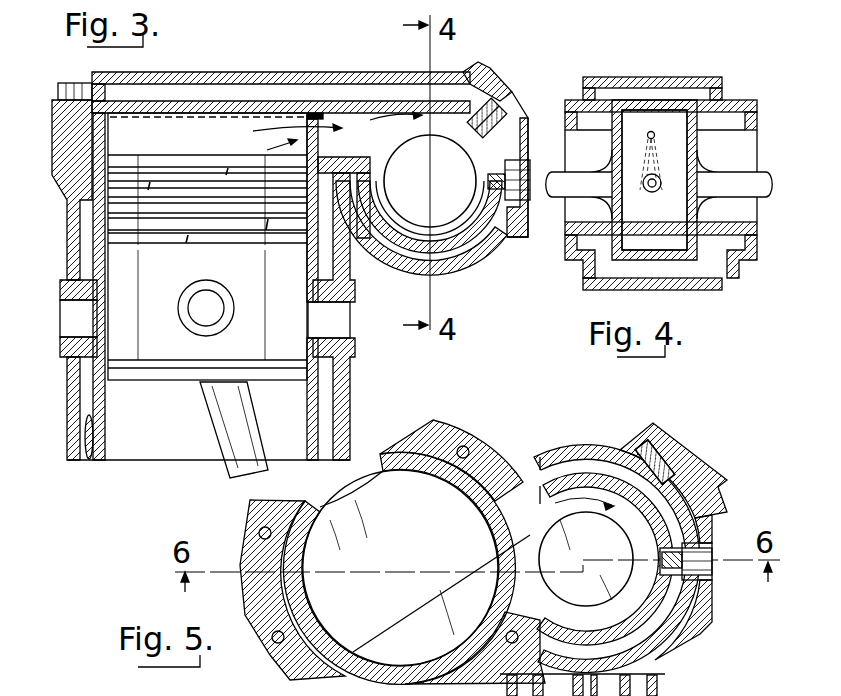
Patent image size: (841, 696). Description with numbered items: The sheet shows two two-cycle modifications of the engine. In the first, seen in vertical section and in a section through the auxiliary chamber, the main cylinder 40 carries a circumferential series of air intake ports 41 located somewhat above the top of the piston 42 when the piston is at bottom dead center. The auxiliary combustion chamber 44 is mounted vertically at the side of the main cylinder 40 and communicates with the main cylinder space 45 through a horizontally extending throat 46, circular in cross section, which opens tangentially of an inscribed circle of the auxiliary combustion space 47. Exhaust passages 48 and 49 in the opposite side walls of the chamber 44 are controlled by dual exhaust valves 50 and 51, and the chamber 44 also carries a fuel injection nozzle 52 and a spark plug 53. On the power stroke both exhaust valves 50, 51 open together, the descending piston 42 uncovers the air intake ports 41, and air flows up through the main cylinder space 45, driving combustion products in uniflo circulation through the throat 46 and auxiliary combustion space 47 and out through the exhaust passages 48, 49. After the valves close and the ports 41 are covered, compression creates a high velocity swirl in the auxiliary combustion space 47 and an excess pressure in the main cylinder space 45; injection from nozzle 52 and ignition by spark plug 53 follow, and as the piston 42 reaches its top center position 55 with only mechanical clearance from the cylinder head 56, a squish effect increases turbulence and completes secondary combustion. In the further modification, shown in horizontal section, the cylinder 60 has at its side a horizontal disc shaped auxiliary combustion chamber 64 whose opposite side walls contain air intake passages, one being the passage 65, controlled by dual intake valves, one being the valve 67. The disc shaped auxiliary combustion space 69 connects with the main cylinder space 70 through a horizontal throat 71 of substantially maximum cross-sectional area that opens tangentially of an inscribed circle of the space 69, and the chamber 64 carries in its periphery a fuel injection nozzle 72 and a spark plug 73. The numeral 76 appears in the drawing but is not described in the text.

In FIG. 3, the main cylinder 40 is at (78, 238).
In FIG. 3, the air intake ports 41 is at (95, 308).
In FIG. 3, the piston 42 is at (165, 348).
In FIG. 3, the auxiliary combustion chamber 44 is at (465, 245).
In FIG. 4, the auxiliary combustion chamber 44 is at (661, 106).
In FIG. 3, the main cylinder space 45 is at (218, 146).
In FIG. 3, the throat 46 is at (333, 168).
In FIG. 3, the auxiliary combustion space 47 is at (412, 190).
In FIG. 4, the auxiliary combustion space 47 is at (668, 235).
In FIG. 4, the exhaust passage 48 is at (575, 216).
In FIG. 4, the exhaust passage 49 is at (737, 218).
In FIG. 4, the exhaust valve 50 is at (550, 200).
In FIG. 4, the exhaust valve 51 is at (755, 197).
In FIG. 3, the fuel injection nozzle 52 is at (503, 98).
In FIG. 4, the fuel injection nozzle 52 is at (655, 131).
In FIG. 3, the spark plug 53 is at (531, 178).
In FIG. 4, the spark plug 53 is at (661, 178).
In FIG. 3, the top center position 55 is at (162, 120).
In FIG. 3, the cylinder head 56 is at (236, 105).
In FIG. 5, the cylinder 60 is at (457, 434).
In FIG. 5, the auxiliary combustion chamber 64 is at (577, 470).
In FIG. 5, the air intake passage 65 is at (627, 689).
In FIG. 5, the intake valve 67 is at (613, 688).
In FIG. 5, the auxiliary combustion space 69 is at (597, 542).
In FIG. 5, the main cylinder space 70 is at (437, 545).
In FIG. 5, the throat 71 is at (449, 587).
In FIG. 5, the fuel injection nozzle 72 is at (690, 462).
In FIG. 5, the spark plug 73 is at (716, 570).
In FIG. 5, the transfer port 76 is at (300, 695).